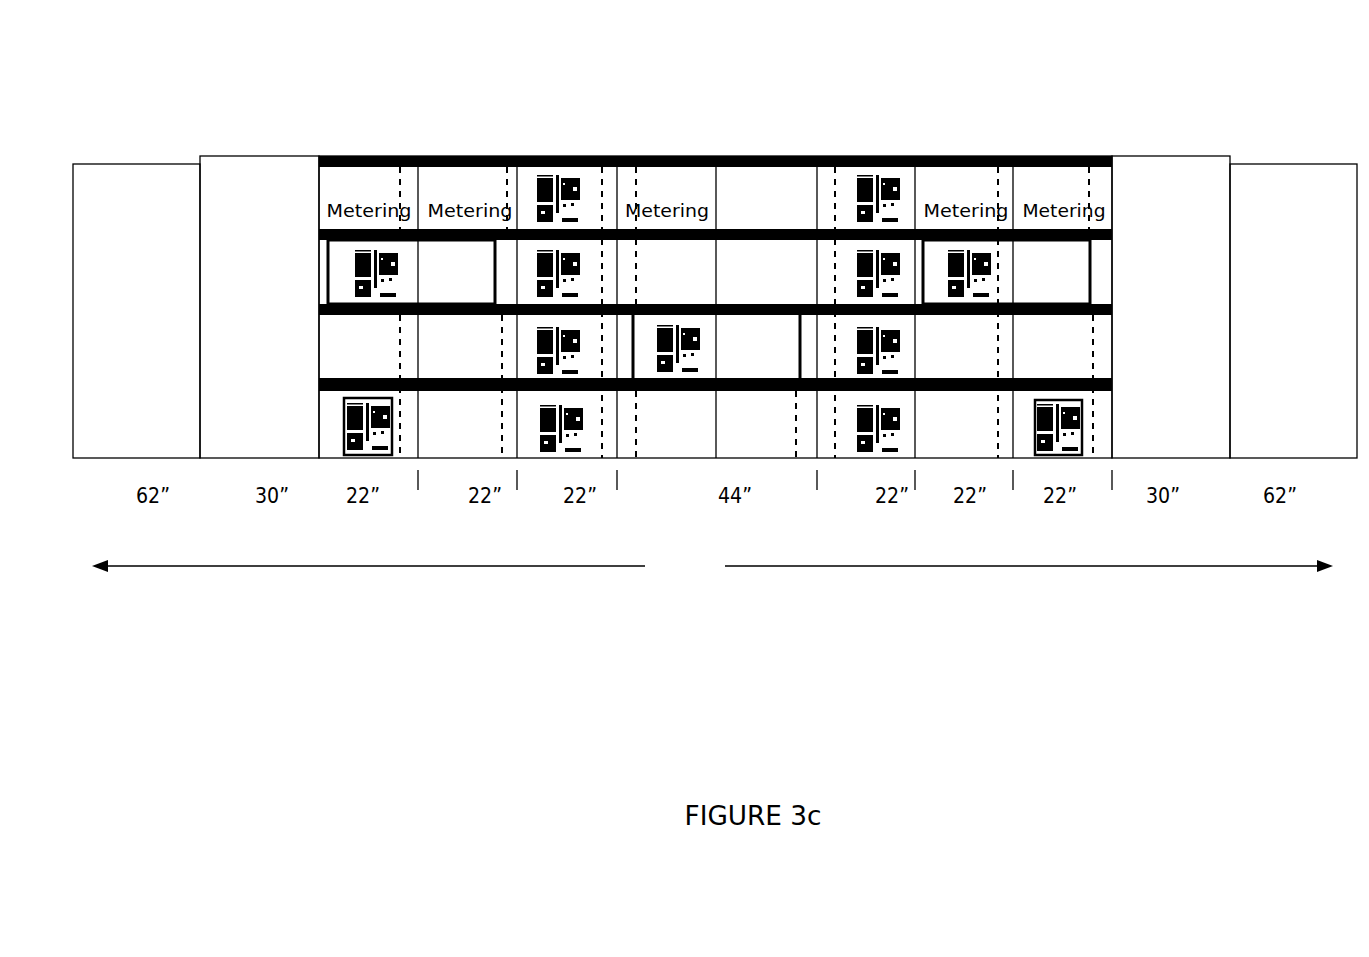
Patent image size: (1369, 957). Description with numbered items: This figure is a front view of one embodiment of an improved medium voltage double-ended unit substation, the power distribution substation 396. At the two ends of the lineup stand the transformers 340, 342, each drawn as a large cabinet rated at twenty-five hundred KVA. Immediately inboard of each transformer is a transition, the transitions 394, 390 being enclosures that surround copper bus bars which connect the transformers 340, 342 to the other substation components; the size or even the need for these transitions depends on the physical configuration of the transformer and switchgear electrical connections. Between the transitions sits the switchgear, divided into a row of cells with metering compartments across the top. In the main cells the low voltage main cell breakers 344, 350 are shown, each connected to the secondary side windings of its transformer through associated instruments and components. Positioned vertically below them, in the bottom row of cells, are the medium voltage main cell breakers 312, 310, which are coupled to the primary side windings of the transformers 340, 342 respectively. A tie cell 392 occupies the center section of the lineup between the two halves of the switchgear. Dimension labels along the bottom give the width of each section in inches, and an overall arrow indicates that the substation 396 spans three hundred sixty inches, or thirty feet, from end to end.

The transformer 340 is at (136, 188).
The transformer 342 is at (1288, 187).
The low voltage main cell breaker 344 is at (425, 253).
The low voltage main cell breaker 350 is at (1025, 253).
The tie breaker section 392 is at (761, 327).
The transition 394 is at (232, 415).
The transition 390 is at (1192, 415).
The medium voltage main cell breaker 312 is at (393, 435).
The medium voltage main cell breaker 310 is at (1044, 452).
The power distribution substation 396 is at (588, 722).